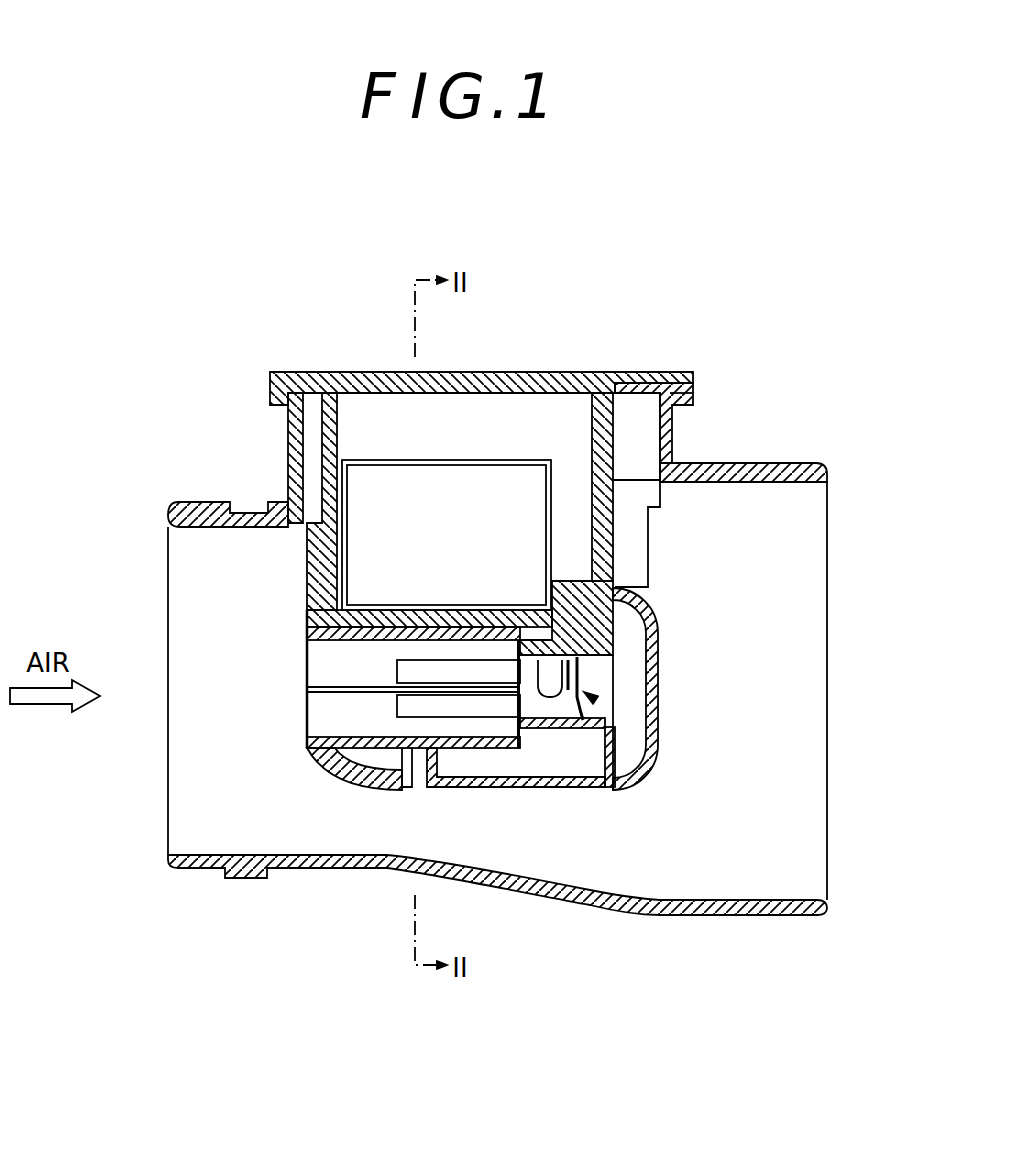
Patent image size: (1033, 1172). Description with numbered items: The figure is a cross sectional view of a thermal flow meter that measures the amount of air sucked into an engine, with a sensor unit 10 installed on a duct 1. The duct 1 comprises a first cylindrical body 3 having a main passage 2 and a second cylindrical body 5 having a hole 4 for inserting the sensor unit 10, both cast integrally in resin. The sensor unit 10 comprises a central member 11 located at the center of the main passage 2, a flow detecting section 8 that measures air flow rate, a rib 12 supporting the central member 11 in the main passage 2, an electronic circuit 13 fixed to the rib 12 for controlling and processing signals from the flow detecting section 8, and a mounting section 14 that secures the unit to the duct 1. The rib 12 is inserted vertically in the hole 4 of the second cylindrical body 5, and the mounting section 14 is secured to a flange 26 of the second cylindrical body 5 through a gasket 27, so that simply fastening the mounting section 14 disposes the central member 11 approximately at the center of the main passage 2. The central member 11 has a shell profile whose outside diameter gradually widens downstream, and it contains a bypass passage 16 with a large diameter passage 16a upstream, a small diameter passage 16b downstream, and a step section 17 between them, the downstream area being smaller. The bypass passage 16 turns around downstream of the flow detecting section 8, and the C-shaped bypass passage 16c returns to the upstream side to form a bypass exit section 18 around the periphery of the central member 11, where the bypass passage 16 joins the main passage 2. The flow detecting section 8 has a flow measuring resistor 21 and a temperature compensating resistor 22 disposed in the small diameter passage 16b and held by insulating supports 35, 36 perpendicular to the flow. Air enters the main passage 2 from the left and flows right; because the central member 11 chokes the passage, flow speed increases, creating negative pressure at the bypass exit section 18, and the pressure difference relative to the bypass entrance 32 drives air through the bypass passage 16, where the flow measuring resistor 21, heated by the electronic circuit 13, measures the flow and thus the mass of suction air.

The duct 1 is at (160, 598).
The main passage 2 is at (182, 758).
The first cylindrical body 3 is at (194, 512).
The hole 4 is at (310, 372).
The second cylindrical body 5 is at (286, 432).
The flow detecting section 8 is at (600, 703).
The sensor unit 10 is at (278, 372).
The central member 11 is at (363, 732).
The rib 12 is at (673, 465).
The electronic circuit 13 is at (492, 512).
The mounting section 14 is at (660, 372).
The bypass passage 16 is at (380, 748).
The large diameter passage 16a is at (318, 735).
The small diameter passage 16b is at (600, 655).
The bypass passage 16c is at (493, 765).
The step section 17 is at (557, 790).
The bypass exit section 18 is at (421, 790).
The flow measuring resistor 21 is at (645, 585).
The temperature compensating resistor 22 is at (623, 790).
The flange 26 is at (693, 397).
The gasket 27 is at (677, 372).
The bypass entrance 32 is at (306, 645).
The insulating support 35 is at (560, 660).
The insulating support 36 is at (650, 660).